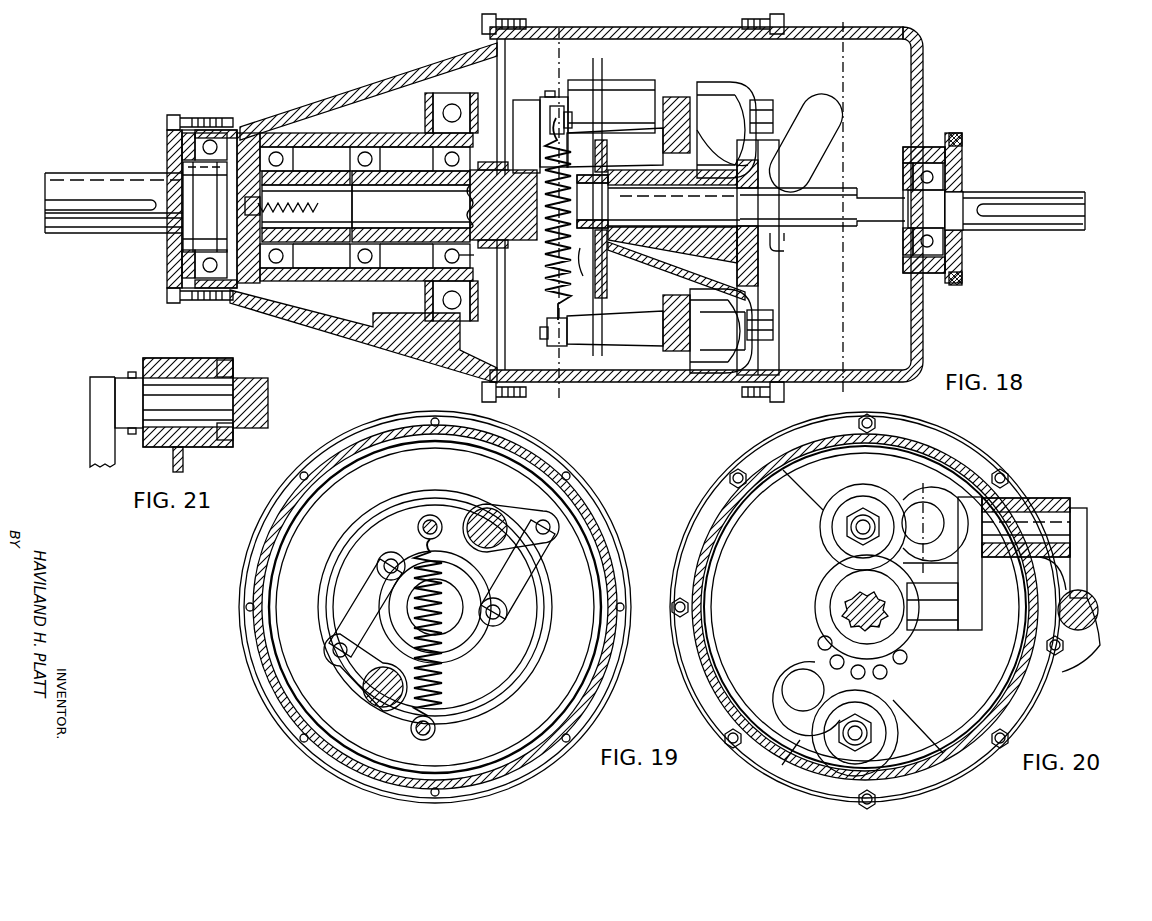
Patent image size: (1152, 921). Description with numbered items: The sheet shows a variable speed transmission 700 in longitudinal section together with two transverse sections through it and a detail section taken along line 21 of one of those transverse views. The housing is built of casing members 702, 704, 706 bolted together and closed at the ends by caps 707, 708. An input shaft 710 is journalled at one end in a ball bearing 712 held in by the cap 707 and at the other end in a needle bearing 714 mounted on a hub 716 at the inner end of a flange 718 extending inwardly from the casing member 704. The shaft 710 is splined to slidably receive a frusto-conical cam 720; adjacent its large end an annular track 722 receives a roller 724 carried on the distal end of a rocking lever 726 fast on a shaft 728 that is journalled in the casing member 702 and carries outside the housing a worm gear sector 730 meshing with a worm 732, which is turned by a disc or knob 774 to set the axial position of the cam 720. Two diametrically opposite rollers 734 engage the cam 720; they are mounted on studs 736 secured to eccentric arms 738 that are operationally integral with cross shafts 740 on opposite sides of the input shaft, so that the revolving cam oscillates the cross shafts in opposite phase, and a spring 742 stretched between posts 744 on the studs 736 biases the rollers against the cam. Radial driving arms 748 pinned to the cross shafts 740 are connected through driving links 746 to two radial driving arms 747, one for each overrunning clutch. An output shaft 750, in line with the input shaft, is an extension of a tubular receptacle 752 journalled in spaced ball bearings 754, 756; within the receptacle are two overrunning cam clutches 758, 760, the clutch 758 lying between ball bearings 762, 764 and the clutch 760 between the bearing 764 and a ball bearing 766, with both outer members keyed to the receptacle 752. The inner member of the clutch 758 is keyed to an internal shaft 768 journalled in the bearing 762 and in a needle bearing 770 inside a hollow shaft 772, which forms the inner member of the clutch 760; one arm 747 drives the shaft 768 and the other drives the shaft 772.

In FIG. 18, the transmission 700 is at (343, 71).
In FIG. 18, the casing member 702 is at (921, 78).
In FIG. 18, the casing member 704 is at (660, 27).
In FIG. 18, the casing member 706 is at (440, 70).
In FIG. 18, the cap 707 is at (962, 174).
In FIG. 18, the cap 708 is at (170, 152).
In FIG. 18, the input shaft 710 is at (1008, 193).
In FIG. 20, the input shaft 710 is at (852, 610).
In FIG. 18, the ball bearing 712 is at (903, 176).
In FIG. 18, the needle bearing 714 is at (606, 252).
In FIG. 18, the hub 716 is at (585, 250).
In FIG. 18, the flange 718 is at (597, 76).
In FIG. 21, the flange 718 is at (186, 360).
In FIG. 18, the cam 720 is at (730, 250).
In FIG. 20, the cam 720 is at (816, 626).
In FIG. 18, the annular track 722 is at (788, 250).
In FIG. 18, the roller 724 is at (768, 186).
In FIG. 20, the roller 724 is at (912, 638).
In FIG. 18, the rocking lever 726 is at (803, 158).
In FIG. 20, the rocking lever 726 is at (981, 594).
In FIG. 20, the shaft 728 is at (1045, 516).
In FIG. 20, the worm gear sector 730 is at (1080, 586).
In FIG. 20, the worm 732 is at (1078, 632).
In FIG. 18, the rollers 734 is at (744, 63).
In FIG. 20, the rollers 734 is at (821, 521).
In FIG. 18, the studs 736 is at (740, 324).
In FIG. 20, the studs 736 is at (850, 534).
In FIG. 18, the eccentric arms 738 is at (674, 100).
In FIG. 20, the eccentric arms 738 is at (900, 497).
In FIG. 21, the eccentric arms 738 is at (251, 380).
In FIG. 19, the cross shafts 740 is at (490, 520).
In FIG. 21, the cross shafts 740 is at (182, 378).
In FIG. 18, the spring 742 is at (549, 290).
In FIG. 19, the spring 742 is at (446, 680).
In FIG. 18, the posts 744 is at (634, 110).
In FIG. 18, the driving link 746 is at (527, 103).
In FIG. 19, the driving link 746 is at (536, 566).
In FIG. 21, the driving link 746 is at (96, 392).
In FIG. 19, the radial driving arms 747 is at (413, 604).
In FIG. 18, the radial driving arms 748 is at (548, 100).
In FIG. 19, the radial driving arms 748 is at (512, 530).
In FIG. 21, the radial driving arms 748 is at (133, 376).
In FIG. 18, the output shaft 750 is at (117, 233).
In FIG. 18, the tubular receptacle 752 is at (345, 135).
In FIG. 18, the ball bearing 754 is at (183, 266).
In FIG. 18, the ball bearing 756 is at (432, 112).
In FIG. 18, the overrunning cam clutch 758 is at (326, 282).
In FIG. 18, the overrunning cam clutch 760 is at (433, 300).
In FIG. 18, the ball bearing 762 is at (252, 281).
In FIG. 18, the ball bearing 764 is at (354, 281).
In FIG. 18, the ball bearing 766 is at (459, 255).
In FIG. 18, the internal shaft 768 is at (264, 220).
In FIG. 18, the needle bearing 770 is at (484, 180).
In FIG. 18, the hollow shaft 772 is at (416, 194).
In FIG. 18, the disc or knob 774 is at (960, 136).
In FIG. 20, the section line 21 is at (925, 483).